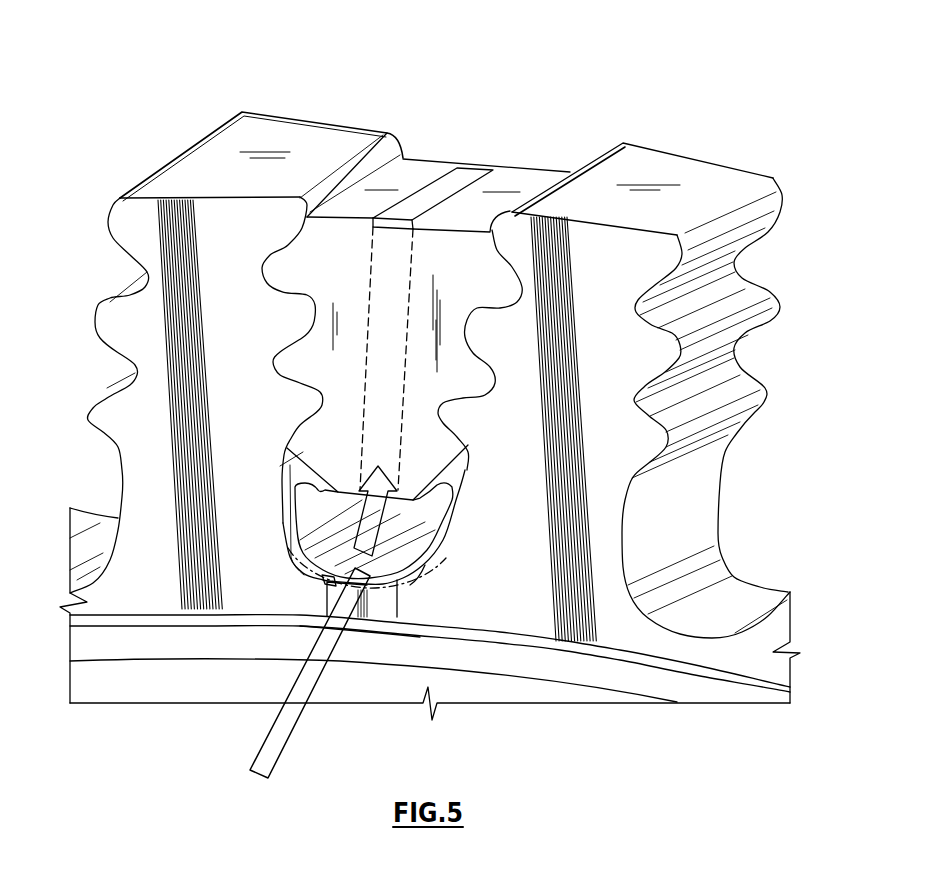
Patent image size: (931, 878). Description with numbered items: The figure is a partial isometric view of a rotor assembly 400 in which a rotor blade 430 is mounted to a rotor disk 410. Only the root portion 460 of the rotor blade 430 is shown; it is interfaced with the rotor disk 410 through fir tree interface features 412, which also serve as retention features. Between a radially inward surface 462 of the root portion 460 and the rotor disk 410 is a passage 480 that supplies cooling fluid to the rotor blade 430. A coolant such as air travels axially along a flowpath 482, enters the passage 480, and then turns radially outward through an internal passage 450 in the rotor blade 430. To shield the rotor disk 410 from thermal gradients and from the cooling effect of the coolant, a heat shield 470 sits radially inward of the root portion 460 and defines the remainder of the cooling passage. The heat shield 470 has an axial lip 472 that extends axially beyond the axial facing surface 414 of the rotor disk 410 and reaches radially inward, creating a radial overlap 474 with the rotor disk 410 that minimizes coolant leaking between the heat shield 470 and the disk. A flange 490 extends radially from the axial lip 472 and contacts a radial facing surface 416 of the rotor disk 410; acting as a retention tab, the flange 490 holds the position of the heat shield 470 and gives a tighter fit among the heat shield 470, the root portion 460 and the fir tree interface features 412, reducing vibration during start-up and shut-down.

The rotor assembly 400 is at (637, 73).
The rotor disk 410 is at (177, 637).
The fir tree interface features 412 is at (245, 217).
The axial facing surface 414 is at (242, 589).
The radial facing surface 416 is at (372, 626).
The rotor blade 430 is at (535, 183).
The internal passage 450 is at (420, 203).
The root portion 460 is at (437, 240).
The radially inward surface 462 is at (420, 580).
The heat shield 470 is at (417, 540).
The axial lip 472 is at (435, 583).
The radial overlap 474 is at (310, 585).
The passage 480 is at (348, 517).
The flowpath 482 is at (287, 742).
The flange 490 is at (382, 610).